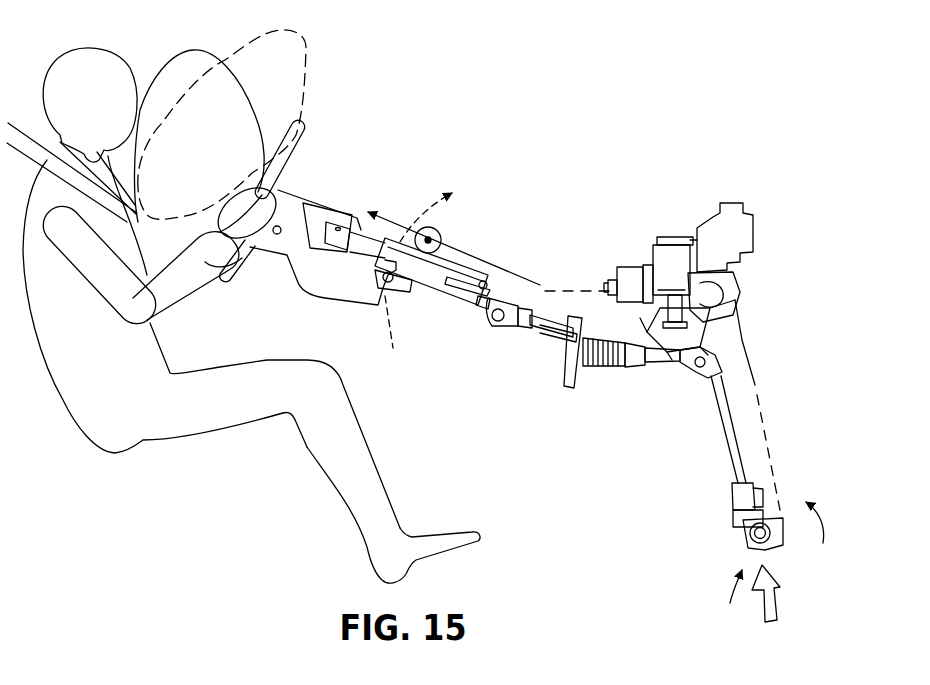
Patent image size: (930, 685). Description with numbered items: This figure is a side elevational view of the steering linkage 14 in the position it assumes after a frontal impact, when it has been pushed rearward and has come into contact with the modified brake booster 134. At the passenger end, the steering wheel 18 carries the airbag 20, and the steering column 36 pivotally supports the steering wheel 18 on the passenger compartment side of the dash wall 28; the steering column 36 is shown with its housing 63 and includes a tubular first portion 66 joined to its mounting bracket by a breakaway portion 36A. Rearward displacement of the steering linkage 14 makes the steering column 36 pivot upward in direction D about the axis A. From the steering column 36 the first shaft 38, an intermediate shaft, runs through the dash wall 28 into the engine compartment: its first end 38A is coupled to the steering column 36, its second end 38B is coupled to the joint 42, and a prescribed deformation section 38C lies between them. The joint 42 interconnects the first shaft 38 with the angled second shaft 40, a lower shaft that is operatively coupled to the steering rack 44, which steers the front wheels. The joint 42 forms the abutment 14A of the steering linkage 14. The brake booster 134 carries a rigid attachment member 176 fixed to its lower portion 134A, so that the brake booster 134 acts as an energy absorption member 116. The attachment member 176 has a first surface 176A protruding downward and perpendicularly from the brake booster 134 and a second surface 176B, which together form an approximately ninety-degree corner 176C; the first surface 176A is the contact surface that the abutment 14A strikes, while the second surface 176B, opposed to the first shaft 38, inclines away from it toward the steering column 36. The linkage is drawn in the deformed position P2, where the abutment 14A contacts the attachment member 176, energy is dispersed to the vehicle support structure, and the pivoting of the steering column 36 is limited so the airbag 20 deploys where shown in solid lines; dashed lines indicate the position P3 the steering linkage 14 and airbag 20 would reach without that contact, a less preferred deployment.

The airbag 20 is at (166, 68).
The steering wheel 18 is at (298, 147).
The housing 63 is at (304, 278).
The first portion 66 is at (443, 298).
The steering column 36 is at (403, 295).
The breakaway portion 36A is at (484, 298).
The steering linkage 14 is at (545, 308).
The abutment 14A is at (696, 386).
The first shaft 38 is at (656, 366).
The first end 38A is at (535, 337).
The second end 38B is at (674, 366).
The prescribed deformation section 38C is at (604, 367).
The dash wall 28 is at (568, 374).
The energy absorption member 116 is at (621, 292).
The brake booster 134 is at (735, 283).
The lower portion 134A is at (713, 326).
The attachment member 176 is at (727, 333).
The first surface 176A is at (705, 345).
The second surface 176B is at (656, 312).
The corner 176C is at (730, 352).
The joint 42 is at (742, 356).
The second shaft 40 is at (727, 457).
The steering rack 44 is at (743, 542).
The axis A is at (436, 231).
The direction D is at (389, 331).
The position P2 is at (749, 601).
The position P3 is at (821, 536).